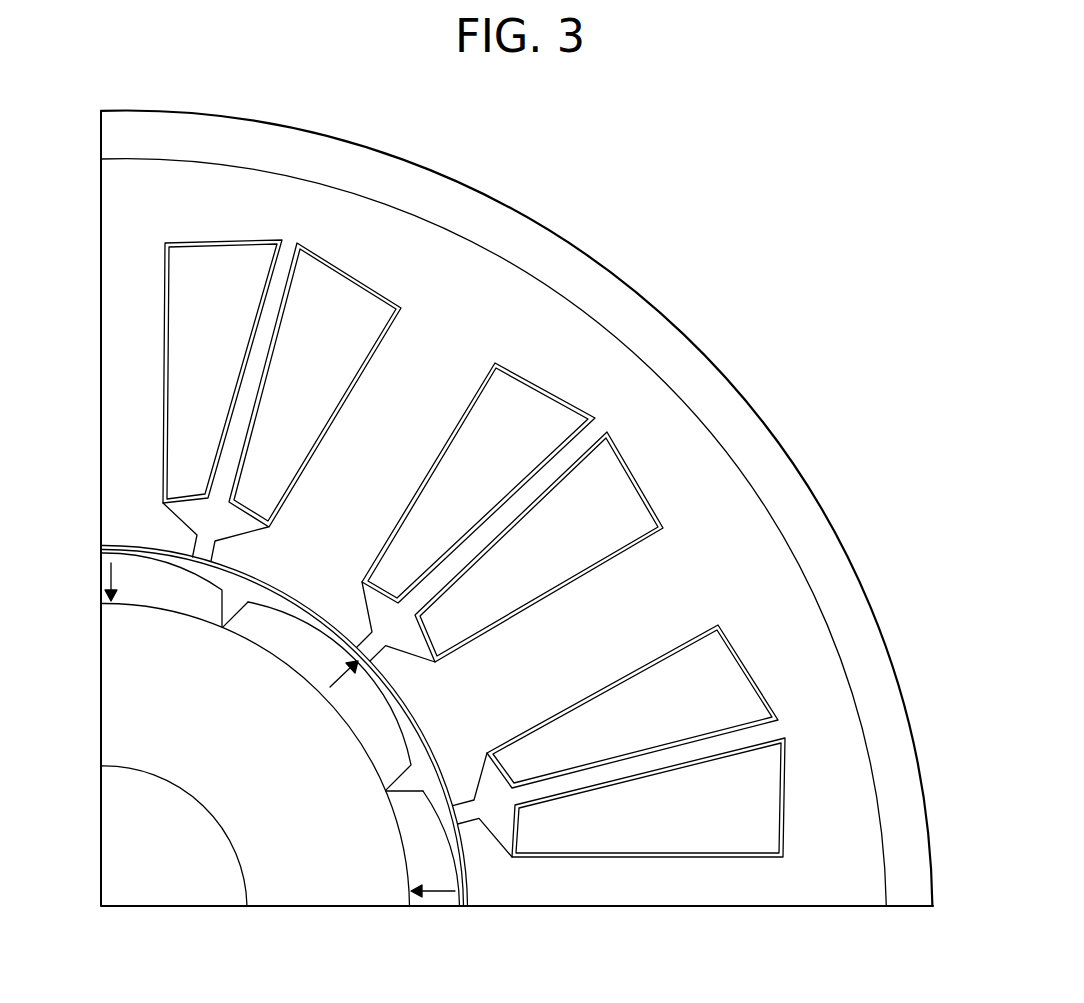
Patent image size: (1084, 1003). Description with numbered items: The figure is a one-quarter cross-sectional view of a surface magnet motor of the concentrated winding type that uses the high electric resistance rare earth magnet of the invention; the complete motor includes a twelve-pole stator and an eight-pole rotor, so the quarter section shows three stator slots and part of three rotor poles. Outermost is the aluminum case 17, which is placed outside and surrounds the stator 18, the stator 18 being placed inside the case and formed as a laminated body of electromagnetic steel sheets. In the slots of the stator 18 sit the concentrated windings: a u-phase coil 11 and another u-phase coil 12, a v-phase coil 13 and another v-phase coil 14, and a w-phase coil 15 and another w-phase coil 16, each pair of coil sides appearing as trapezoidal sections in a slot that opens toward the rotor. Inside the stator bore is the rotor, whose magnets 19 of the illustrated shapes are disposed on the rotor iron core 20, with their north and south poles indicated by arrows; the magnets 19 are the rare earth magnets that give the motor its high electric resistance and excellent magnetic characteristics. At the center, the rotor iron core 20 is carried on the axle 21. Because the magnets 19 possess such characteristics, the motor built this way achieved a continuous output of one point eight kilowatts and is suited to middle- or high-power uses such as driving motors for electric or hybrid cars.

The u-phase coil 11 is at (178, 362).
The u-phase coil 12 is at (637, 840).
The v-phase coil 13 is at (660, 682).
The v-phase coil 14 is at (507, 603).
The w-phase coil 15 is at (425, 497).
The w-phase coil 16 is at (320, 402).
The aluminum case 17 is at (867, 600).
The stator 18 is at (790, 905).
The magnet 19 is at (437, 905).
The rotor iron core 20 is at (322, 905).
The axle 21 is at (170, 896).